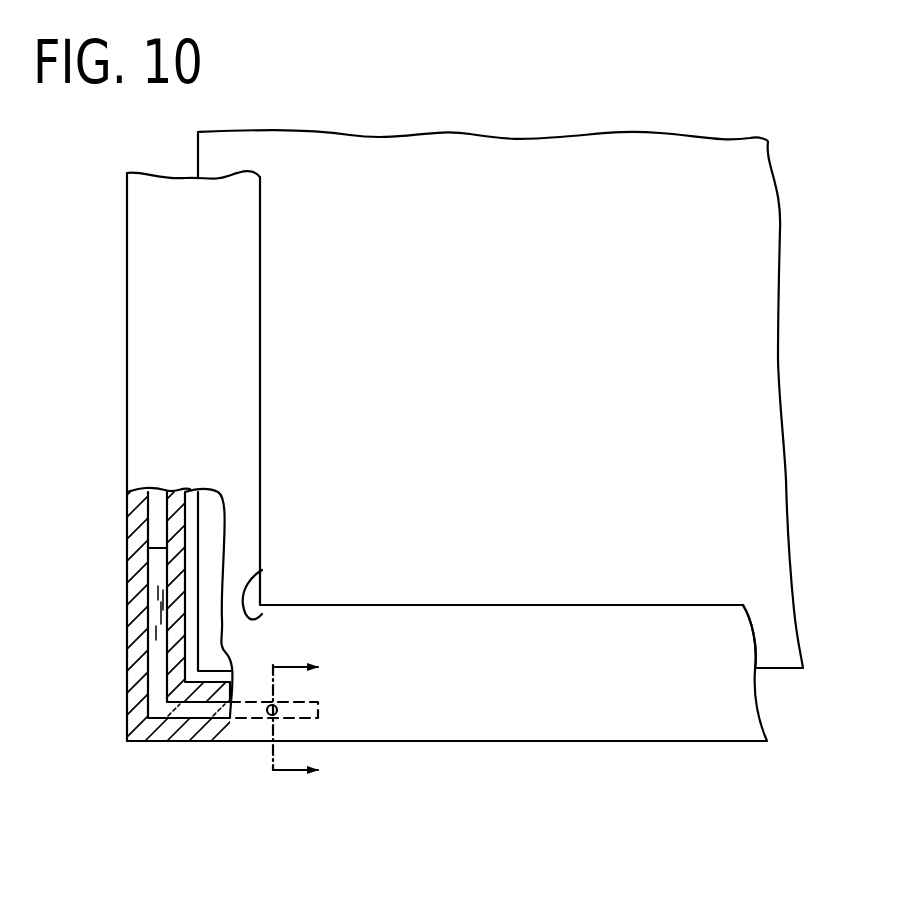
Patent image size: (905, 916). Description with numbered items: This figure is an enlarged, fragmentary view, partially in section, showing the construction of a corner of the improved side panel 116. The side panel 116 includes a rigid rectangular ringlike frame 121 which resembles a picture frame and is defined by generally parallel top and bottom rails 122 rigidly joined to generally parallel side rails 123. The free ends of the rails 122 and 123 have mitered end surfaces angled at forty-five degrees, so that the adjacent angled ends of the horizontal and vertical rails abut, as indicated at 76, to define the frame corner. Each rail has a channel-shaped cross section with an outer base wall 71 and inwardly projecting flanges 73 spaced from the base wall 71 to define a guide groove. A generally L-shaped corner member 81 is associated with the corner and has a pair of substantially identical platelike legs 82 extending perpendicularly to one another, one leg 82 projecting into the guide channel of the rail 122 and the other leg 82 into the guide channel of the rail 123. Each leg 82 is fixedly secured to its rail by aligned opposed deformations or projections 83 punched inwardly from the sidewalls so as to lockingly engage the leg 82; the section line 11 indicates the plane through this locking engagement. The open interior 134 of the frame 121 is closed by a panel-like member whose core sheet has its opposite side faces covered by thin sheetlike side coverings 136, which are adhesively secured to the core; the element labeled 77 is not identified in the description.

The side panel 116 is at (540, 100).
The open interior 134 is at (257, 249).
The side frame element or rail 123 is at (138, 415).
The side covering 136 is at (676, 550).
The top or bottom frame element or rail 122 is at (572, 724).
The frame 121 is at (702, 744).
The abutting mitered rail ends 76 is at (223, 643).
The corner 77 is at (240, 630).
The base wall 71 is at (143, 575).
The flange 73 is at (173, 513).
The corner member 81 is at (150, 610).
The platelike leg 82 is at (153, 668).
The deformation or projection 83 is at (267, 715).
The section line 11 is at (308, 723).